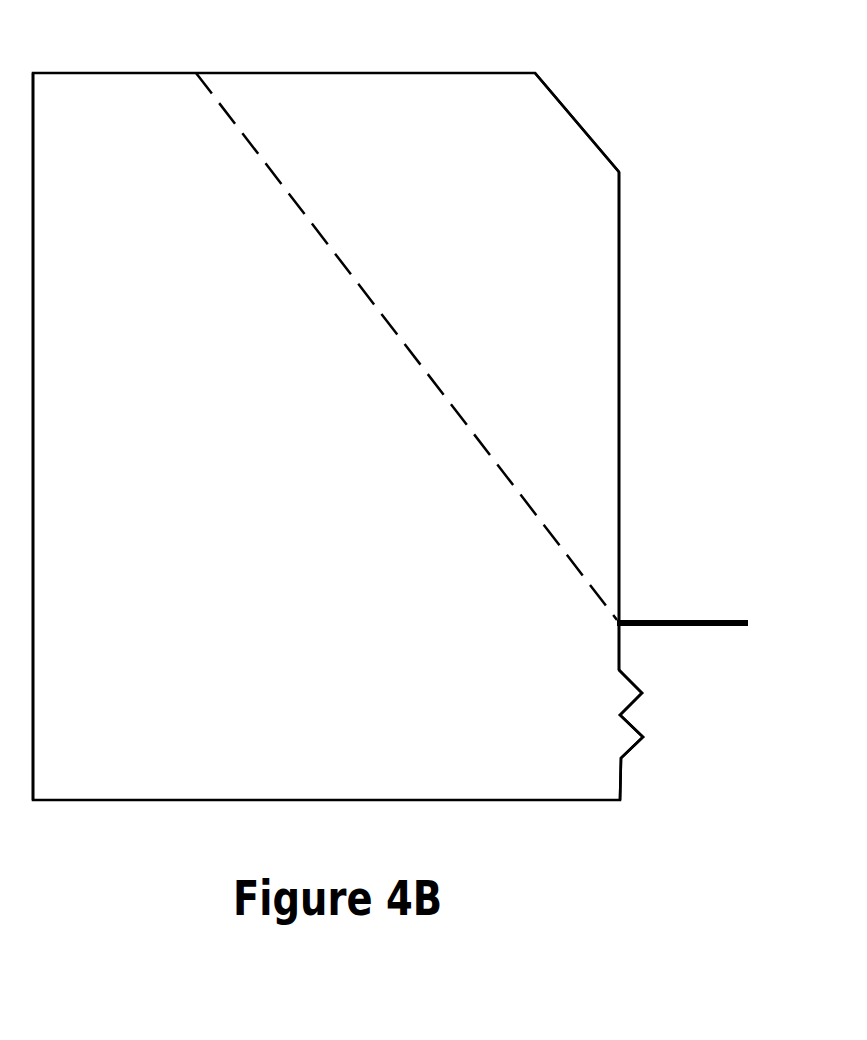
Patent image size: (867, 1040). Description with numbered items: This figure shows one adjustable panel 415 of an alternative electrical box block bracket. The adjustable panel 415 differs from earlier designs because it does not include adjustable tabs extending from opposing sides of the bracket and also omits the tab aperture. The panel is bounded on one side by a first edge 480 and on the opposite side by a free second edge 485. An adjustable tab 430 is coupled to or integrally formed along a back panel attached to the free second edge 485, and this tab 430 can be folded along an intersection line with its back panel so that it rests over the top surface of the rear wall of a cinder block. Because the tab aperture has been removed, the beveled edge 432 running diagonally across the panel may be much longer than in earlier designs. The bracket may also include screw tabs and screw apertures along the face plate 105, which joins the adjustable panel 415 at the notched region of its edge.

The adjustable panel 415 is at (138, 709).
The first edge 480 is at (36, 445).
The free second edge 485 is at (622, 370).
The beveled edge 432 is at (366, 256).
The adjustable tab 430 is at (722, 618).
The face plate 105 is at (638, 709).